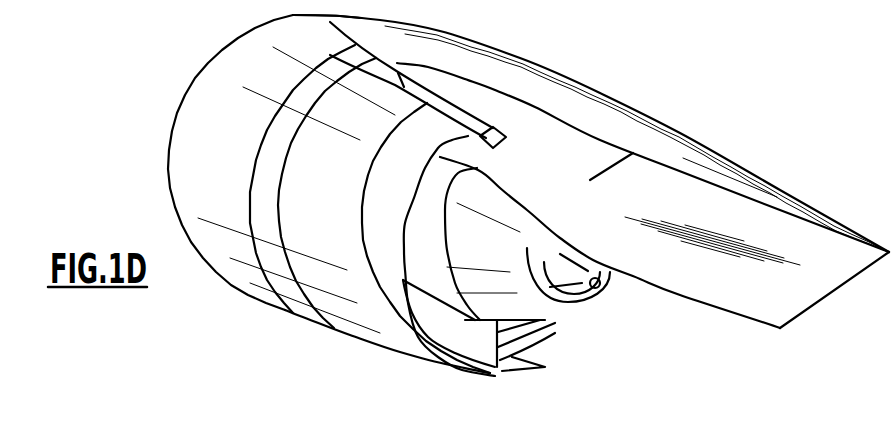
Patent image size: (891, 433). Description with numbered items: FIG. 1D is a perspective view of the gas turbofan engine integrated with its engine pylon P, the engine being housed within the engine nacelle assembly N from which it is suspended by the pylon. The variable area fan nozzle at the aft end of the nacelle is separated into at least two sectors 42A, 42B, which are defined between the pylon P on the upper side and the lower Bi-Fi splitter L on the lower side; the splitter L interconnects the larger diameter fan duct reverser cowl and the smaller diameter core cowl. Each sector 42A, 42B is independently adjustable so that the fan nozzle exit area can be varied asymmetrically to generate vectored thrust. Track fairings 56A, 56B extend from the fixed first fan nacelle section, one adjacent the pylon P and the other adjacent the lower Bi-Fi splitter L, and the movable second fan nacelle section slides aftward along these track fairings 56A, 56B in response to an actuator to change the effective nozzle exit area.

The engine nacelle assembly N is at (222, 294).
The engine pylon P is at (685, 159).
The track fairing 56A is at (468, 115).
The track fairing 56B is at (528, 369).
The VAFN sector 42A is at (400, 318).
The VAFN sector 42B is at (562, 331).
The lower Bi-Fi splitter L is at (467, 337).